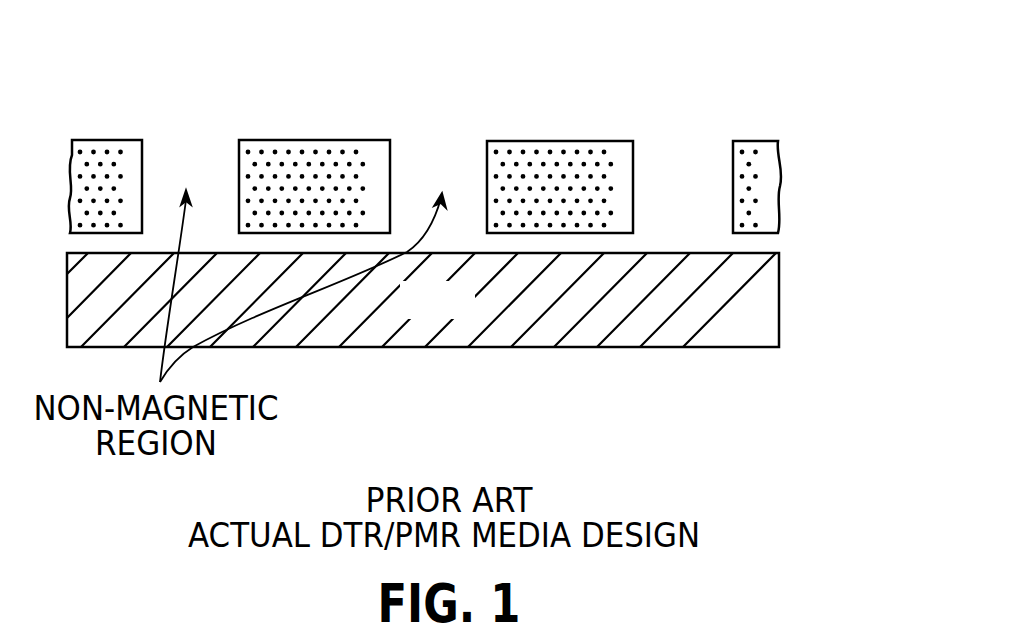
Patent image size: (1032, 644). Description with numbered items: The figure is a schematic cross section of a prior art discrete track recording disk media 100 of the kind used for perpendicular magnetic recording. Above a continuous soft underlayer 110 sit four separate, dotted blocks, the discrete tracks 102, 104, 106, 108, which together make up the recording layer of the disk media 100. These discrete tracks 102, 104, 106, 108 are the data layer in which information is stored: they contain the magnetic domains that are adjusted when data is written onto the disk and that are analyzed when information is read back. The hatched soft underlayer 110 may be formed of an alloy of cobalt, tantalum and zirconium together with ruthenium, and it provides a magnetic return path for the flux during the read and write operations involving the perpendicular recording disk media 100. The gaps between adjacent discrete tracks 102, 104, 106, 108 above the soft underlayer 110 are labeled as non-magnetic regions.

The disk media 100 is at (645, 55).
The discrete track 102 is at (98, 140).
The discrete track 104 is at (317, 140).
The discrete track 106 is at (562, 141).
The discrete track 108 is at (755, 141).
The soft underlayer 110 is at (779, 302).